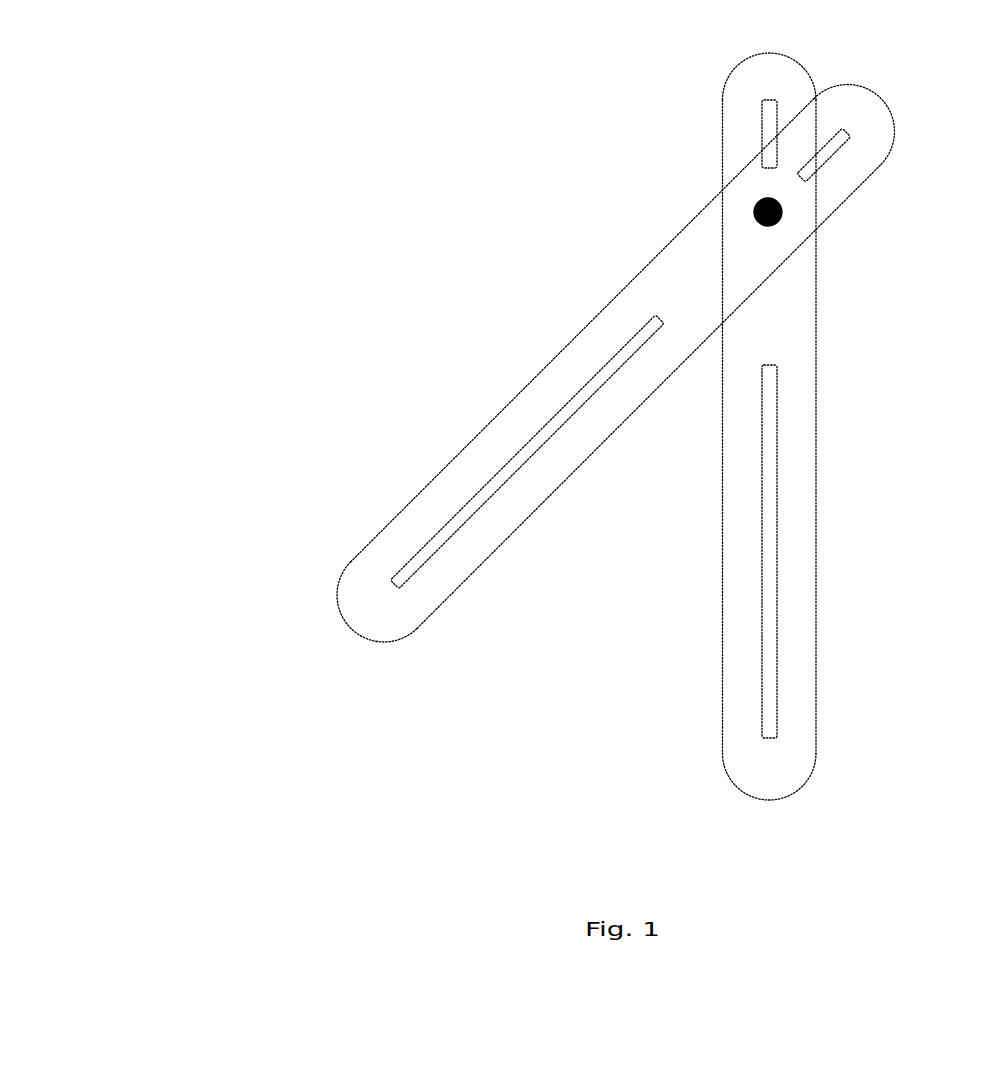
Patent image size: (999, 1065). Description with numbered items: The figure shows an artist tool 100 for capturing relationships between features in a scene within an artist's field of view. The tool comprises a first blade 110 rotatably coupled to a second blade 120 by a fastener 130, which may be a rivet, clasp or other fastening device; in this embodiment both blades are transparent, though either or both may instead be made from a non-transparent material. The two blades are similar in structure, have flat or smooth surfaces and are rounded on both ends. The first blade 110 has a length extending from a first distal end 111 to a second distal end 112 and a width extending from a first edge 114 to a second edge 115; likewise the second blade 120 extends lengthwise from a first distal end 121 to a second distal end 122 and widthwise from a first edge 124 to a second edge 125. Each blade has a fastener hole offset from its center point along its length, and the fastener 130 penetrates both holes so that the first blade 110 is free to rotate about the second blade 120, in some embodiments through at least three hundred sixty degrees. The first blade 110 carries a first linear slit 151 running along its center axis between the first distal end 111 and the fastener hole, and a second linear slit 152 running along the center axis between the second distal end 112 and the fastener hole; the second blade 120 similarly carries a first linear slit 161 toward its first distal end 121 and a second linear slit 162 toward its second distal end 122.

The artist tool 100 is at (138, 238).
The first blade 110 is at (350, 565).
The first distal end 111 is at (347, 625).
The second distal end 112 is at (885, 110).
The first edge 114 is at (557, 487).
The second edge 115 is at (520, 393).
The second blade 120 is at (816, 758).
The first distal end 121 is at (767, 800).
The second distal end 122 is at (770, 53).
The first edge 124 is at (816, 468).
The second edge 125 is at (722, 605).
The fastener 130 is at (780, 217).
The first linear slit 151 is at (507, 470).
The second linear slit 152 is at (840, 148).
The first linear slit 161 is at (762, 677).
The second linear slit 162 is at (763, 125).